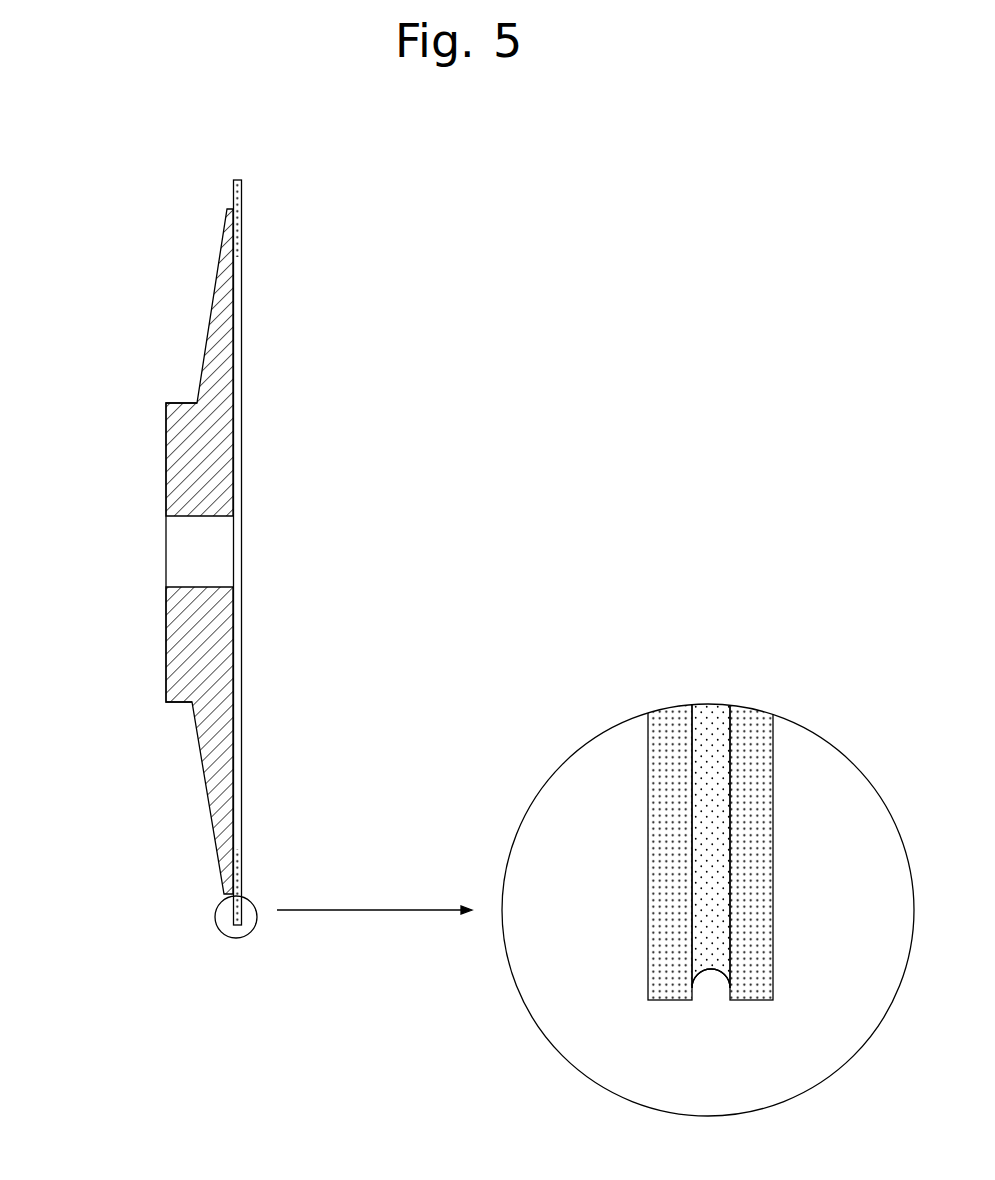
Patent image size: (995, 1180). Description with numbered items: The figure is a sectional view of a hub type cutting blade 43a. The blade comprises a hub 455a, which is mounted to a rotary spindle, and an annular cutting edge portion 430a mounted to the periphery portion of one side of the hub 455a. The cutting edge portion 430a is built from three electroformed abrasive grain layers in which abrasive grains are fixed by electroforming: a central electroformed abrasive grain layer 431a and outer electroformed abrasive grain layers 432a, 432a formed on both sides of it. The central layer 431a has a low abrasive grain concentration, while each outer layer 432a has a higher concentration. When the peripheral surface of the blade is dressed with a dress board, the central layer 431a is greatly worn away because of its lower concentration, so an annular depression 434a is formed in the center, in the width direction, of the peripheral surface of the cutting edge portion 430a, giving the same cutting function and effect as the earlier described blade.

The cutting blade 43a is at (172, 291).
The hub 455a is at (175, 453).
The annular cutting edge portion 430a is at (252, 205).
The central electroformed abrasive grain layer 431a is at (710, 720).
The outer electroformed abrasive grain layer 432a is at (660, 805).
The annular depression 434a is at (712, 994).